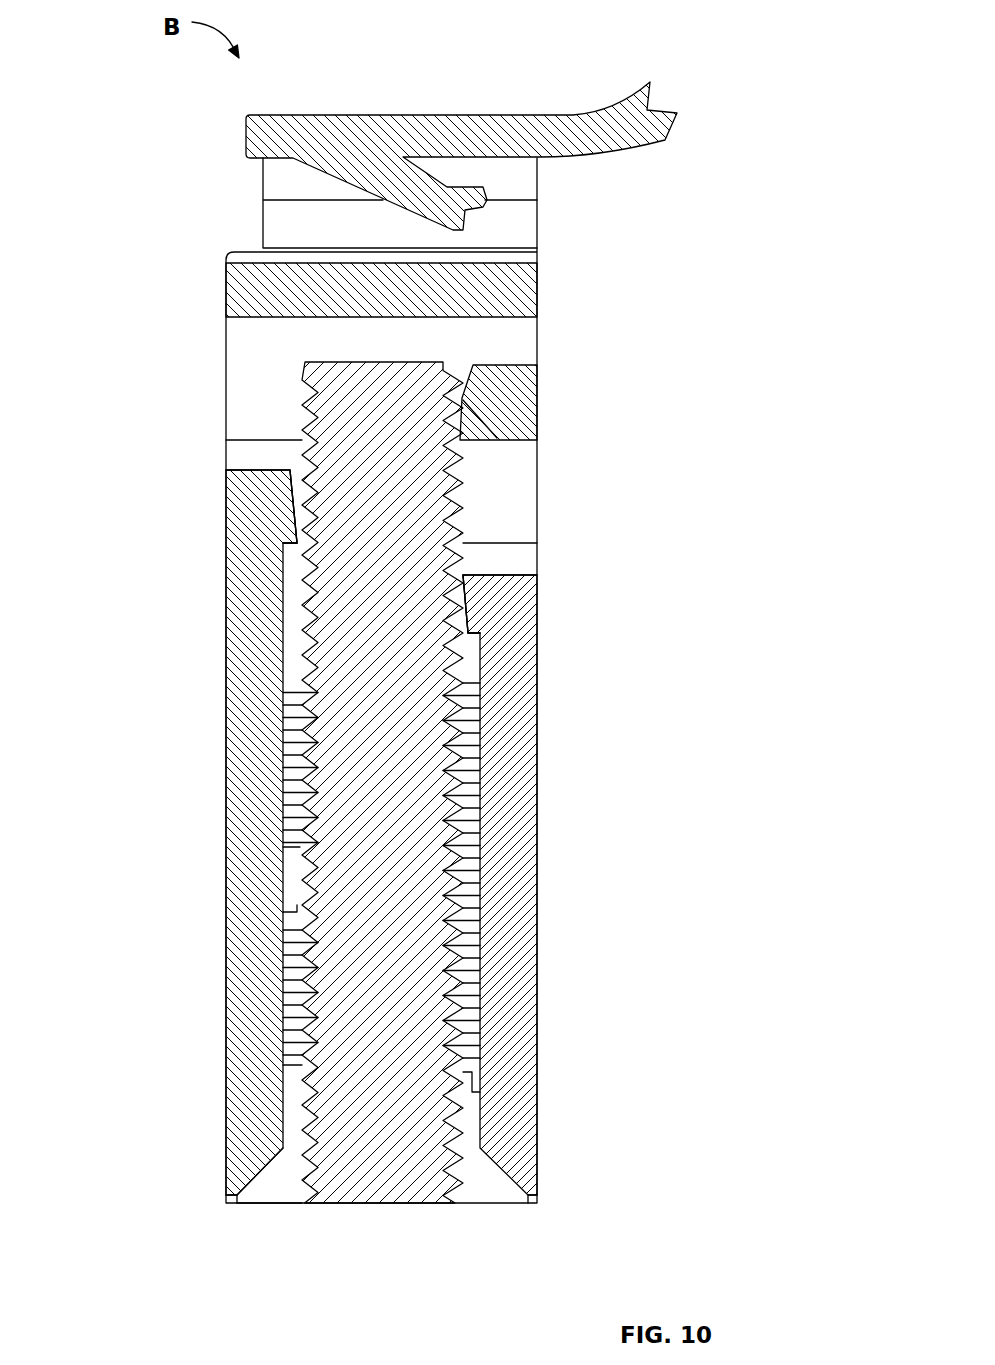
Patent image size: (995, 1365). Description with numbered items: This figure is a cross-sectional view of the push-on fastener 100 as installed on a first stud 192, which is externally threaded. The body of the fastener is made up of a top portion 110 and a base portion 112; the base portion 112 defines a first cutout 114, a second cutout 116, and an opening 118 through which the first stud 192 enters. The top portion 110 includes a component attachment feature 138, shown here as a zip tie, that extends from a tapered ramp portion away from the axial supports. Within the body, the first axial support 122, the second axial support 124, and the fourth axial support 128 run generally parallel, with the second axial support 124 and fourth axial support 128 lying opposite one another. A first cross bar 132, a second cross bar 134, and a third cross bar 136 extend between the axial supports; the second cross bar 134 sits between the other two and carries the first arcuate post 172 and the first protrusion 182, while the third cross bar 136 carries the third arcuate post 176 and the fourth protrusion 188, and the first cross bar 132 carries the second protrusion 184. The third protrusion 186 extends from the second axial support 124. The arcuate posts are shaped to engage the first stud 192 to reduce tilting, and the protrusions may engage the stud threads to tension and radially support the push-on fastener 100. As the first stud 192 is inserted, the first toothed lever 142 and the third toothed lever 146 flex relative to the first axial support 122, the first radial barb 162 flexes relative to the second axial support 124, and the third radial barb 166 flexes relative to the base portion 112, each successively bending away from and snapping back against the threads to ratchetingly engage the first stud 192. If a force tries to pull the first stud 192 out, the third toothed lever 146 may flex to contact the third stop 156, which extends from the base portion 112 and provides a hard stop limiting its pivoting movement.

The push-on fastener 100 is at (232, 124).
The top portion 110 is at (228, 283).
The base portion 112 is at (247, 1153).
The first cutout 114 is at (226, 1198).
The second cutout 116 is at (531, 1208).
The opening 118 is at (267, 1188).
The first axial support 122 is at (245, 357).
The second axial support 124 is at (250, 767).
The fourth axial support 128 is at (517, 1062).
The first cross bar 132 is at (517, 383).
The second cross bar 134 is at (247, 505).
The third cross bar 136 is at (522, 603).
The component attachment feature 138 is at (490, 130).
The first toothed lever 142 is at (295, 722).
The third toothed lever 146 is at (300, 1003).
The third stop 156 is at (300, 1090).
The first radial barb 162 is at (297, 865).
The third radial barb 166 is at (473, 1070).
The first arcuate post 172 is at (297, 517).
The third arcuate post 176 is at (472, 632).
The first protrusion 182 is at (293, 510).
The second protrusion 184 is at (462, 400).
The third protrusion 186 is at (292, 878).
The fourth protrusion 188 is at (468, 608).
The first stud 192 is at (387, 1165).